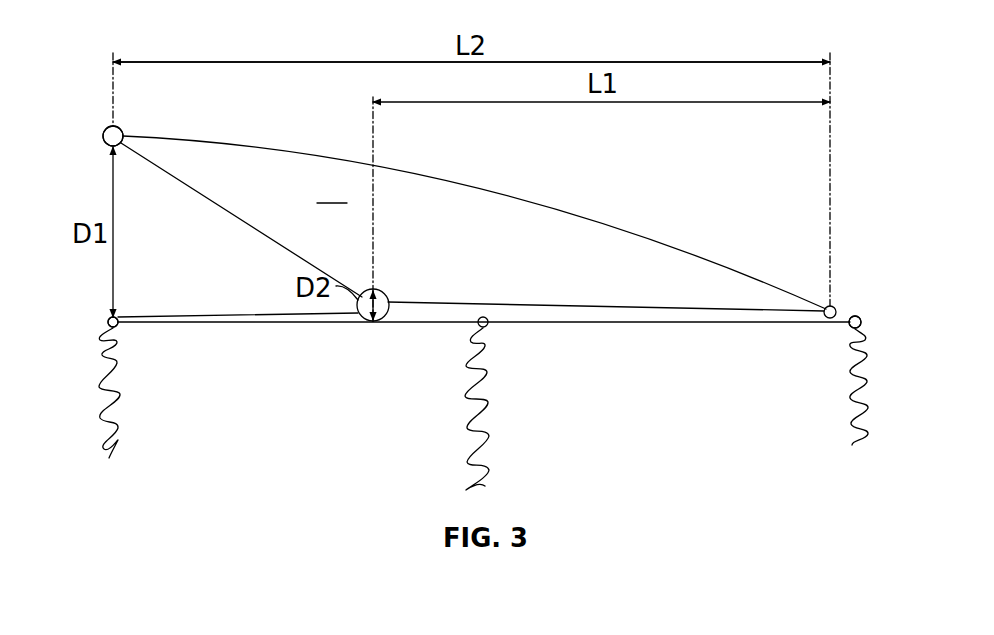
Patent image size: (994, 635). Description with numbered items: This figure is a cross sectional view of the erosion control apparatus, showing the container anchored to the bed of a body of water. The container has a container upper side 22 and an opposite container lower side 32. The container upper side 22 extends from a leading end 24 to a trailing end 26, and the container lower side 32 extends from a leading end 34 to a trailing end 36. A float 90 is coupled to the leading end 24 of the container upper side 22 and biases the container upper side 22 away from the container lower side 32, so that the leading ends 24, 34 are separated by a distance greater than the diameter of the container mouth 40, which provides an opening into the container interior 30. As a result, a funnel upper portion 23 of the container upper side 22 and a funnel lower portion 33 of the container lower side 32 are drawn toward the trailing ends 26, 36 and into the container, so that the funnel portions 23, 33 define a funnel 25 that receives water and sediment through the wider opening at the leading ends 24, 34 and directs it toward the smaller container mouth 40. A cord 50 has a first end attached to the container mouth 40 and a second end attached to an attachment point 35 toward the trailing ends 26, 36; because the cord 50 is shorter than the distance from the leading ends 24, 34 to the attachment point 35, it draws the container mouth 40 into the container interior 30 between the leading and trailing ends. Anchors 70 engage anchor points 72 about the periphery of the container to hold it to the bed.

The container upper side 22 is at (575, 215).
The funnel upper portion 23 is at (256, 216).
The leading end 24 is at (124, 131).
The funnel 25 is at (96, 283).
The trailing end 26 is at (875, 287).
The container interior 30 is at (333, 191).
The container lower side 32 is at (690, 326).
The funnel lower portion 33 is at (255, 316).
The leading end 34 is at (134, 318).
The attachment point 35 is at (824, 307).
The trailing end 36 is at (853, 314).
The container mouth 40 is at (388, 292).
The cord 50 is at (549, 305).
The anchors 70 is at (100, 386).
The anchor points 72 is at (119, 328).
The float 90 is at (107, 128).